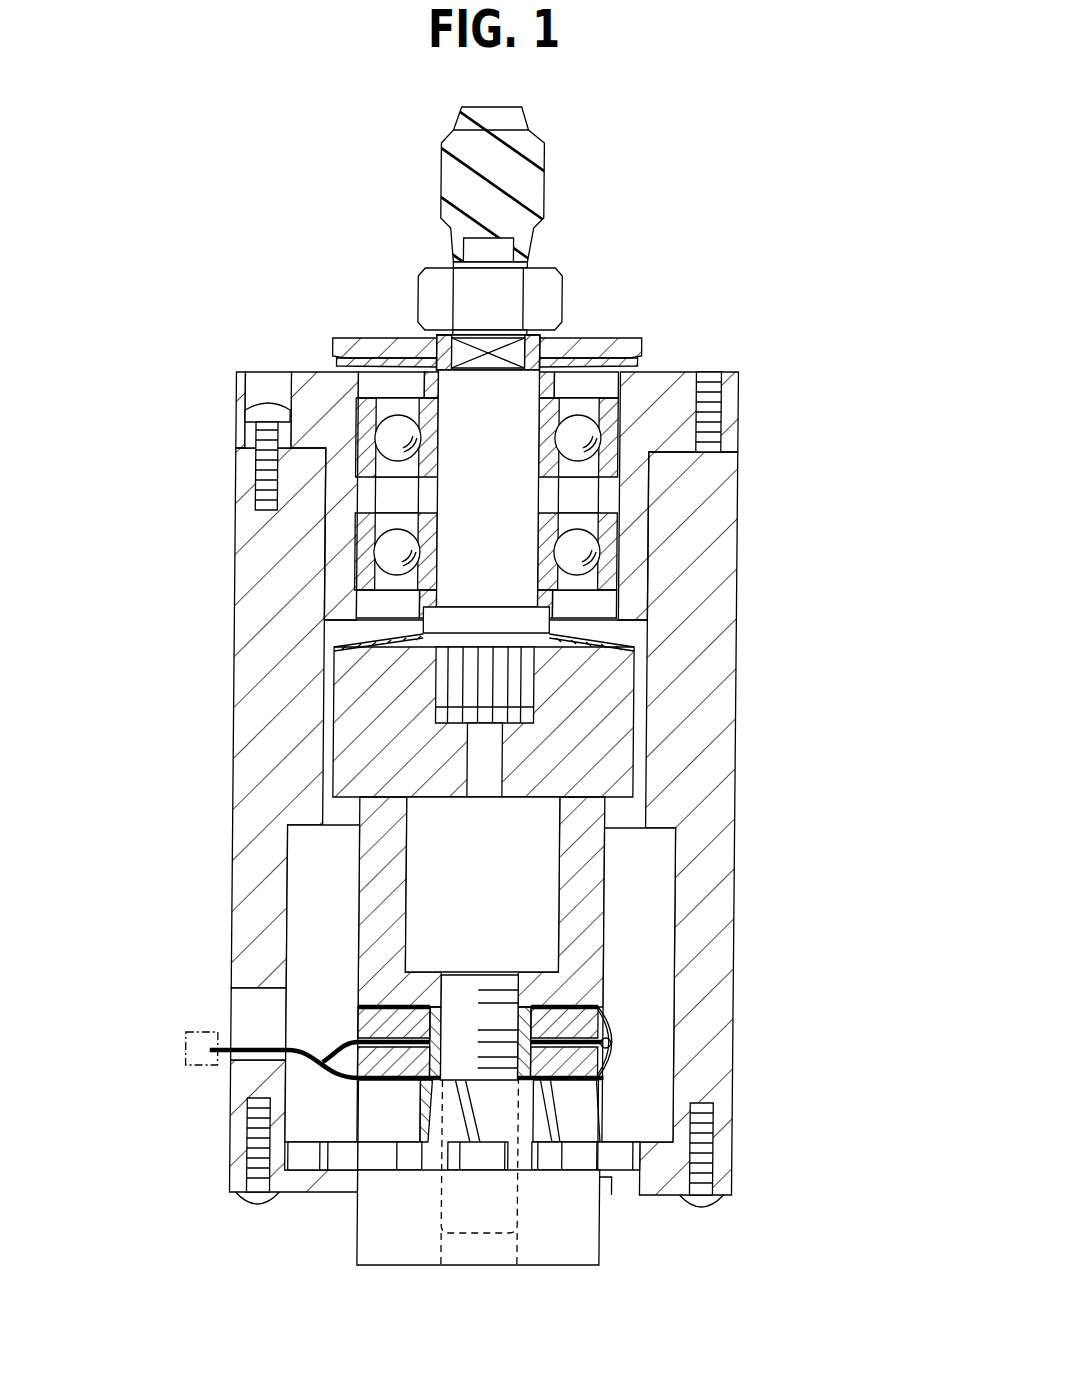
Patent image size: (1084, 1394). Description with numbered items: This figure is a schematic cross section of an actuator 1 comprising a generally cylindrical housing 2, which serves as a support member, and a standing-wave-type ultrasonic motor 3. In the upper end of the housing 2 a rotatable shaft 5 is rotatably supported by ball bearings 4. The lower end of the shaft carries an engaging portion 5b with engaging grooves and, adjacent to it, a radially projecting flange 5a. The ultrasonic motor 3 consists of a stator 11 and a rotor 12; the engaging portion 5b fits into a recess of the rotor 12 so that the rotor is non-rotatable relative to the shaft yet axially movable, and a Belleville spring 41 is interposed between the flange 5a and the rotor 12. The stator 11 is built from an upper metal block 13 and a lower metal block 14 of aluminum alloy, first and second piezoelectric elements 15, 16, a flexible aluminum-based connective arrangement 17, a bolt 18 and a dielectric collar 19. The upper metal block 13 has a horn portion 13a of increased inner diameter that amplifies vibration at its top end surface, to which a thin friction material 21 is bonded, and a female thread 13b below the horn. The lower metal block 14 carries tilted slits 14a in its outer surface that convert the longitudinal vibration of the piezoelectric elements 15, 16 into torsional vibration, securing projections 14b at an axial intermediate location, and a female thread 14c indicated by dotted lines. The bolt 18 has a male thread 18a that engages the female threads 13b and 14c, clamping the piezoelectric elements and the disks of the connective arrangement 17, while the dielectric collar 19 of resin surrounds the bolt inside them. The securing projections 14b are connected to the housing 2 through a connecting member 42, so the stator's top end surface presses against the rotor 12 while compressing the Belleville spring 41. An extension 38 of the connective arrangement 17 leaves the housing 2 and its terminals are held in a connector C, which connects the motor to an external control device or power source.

The actuator 1 is at (763, 218).
The housing 2 is at (735, 500).
The ultrasonic motor 3 is at (795, 740).
The ball bearings 4 is at (553, 543).
The rotatable shaft 5 is at (477, 450).
The flange 5a is at (452, 614).
The engaging portion 5b is at (502, 652).
The stator 11 is at (612, 876).
The rotor 12 is at (640, 740).
The upper metal block 13 is at (605, 932).
The horn portion 13a is at (407, 862).
The female thread 13b is at (445, 992).
The lower metal block 14 is at (600, 1240).
The slits 14a is at (468, 1125).
The securing projections 14b is at (348, 1152).
The female thread 14c is at (448, 1265).
The first piezoelectric element 15 is at (605, 1010).
The second piezoelectric element 16 is at (612, 1063).
The flexible aluminum-based connective arrangement 17 is at (625, 1034).
The bolt 18 is at (479, 983).
The male thread 18a is at (501, 993).
The dielectric collar 19 is at (385, 985).
The friction material 21 is at (348, 798).
The extension 38 is at (300, 1047).
The Belleville spring 41 is at (647, 628).
The connecting member 42 is at (322, 1193).
The connector C is at (188, 1046).